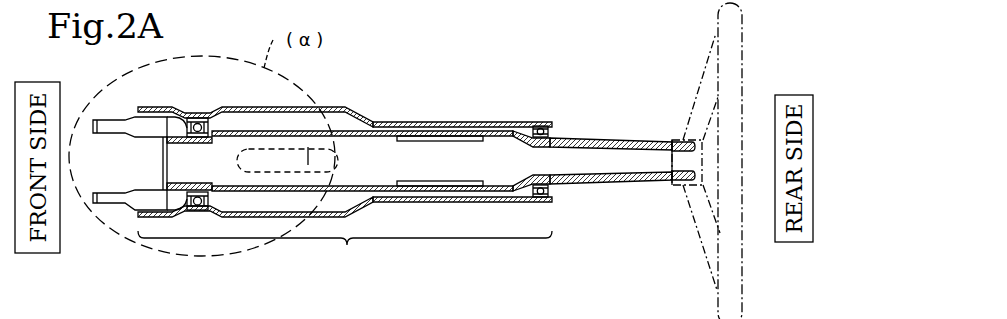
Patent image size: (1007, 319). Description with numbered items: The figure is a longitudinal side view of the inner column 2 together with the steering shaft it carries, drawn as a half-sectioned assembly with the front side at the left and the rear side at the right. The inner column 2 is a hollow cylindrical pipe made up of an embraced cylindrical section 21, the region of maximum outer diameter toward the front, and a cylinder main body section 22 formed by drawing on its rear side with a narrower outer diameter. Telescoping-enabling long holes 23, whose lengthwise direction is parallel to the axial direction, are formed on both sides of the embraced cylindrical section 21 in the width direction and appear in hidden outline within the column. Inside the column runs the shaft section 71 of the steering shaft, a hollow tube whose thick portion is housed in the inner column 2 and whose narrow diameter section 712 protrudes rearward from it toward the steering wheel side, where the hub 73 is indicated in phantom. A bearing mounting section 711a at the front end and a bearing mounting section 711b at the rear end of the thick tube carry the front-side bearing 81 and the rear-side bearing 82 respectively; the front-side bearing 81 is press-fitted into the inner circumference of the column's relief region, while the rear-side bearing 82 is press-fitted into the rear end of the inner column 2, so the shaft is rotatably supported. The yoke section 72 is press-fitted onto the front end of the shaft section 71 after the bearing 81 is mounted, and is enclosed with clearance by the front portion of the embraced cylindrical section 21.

The inner column 2 is at (354, 275).
The embraced cylindrical section 21 is at (345, 103).
The cylinder main body section 22 is at (548, 106).
The telescoping-enabling long holes 23 is at (328, 176).
The shaft section 71 is at (343, 196).
The bearing mounting section 711a is at (216, 208).
The bearing mounting section 711b is at (549, 193).
The narrow diameter section 712 is at (607, 140).
The yoke section 72 is at (120, 207).
The steering wheel hub 73 is at (693, 239).
The front-side bearing 81 is at (173, 122).
The rear-side bearing 82 is at (550, 127).